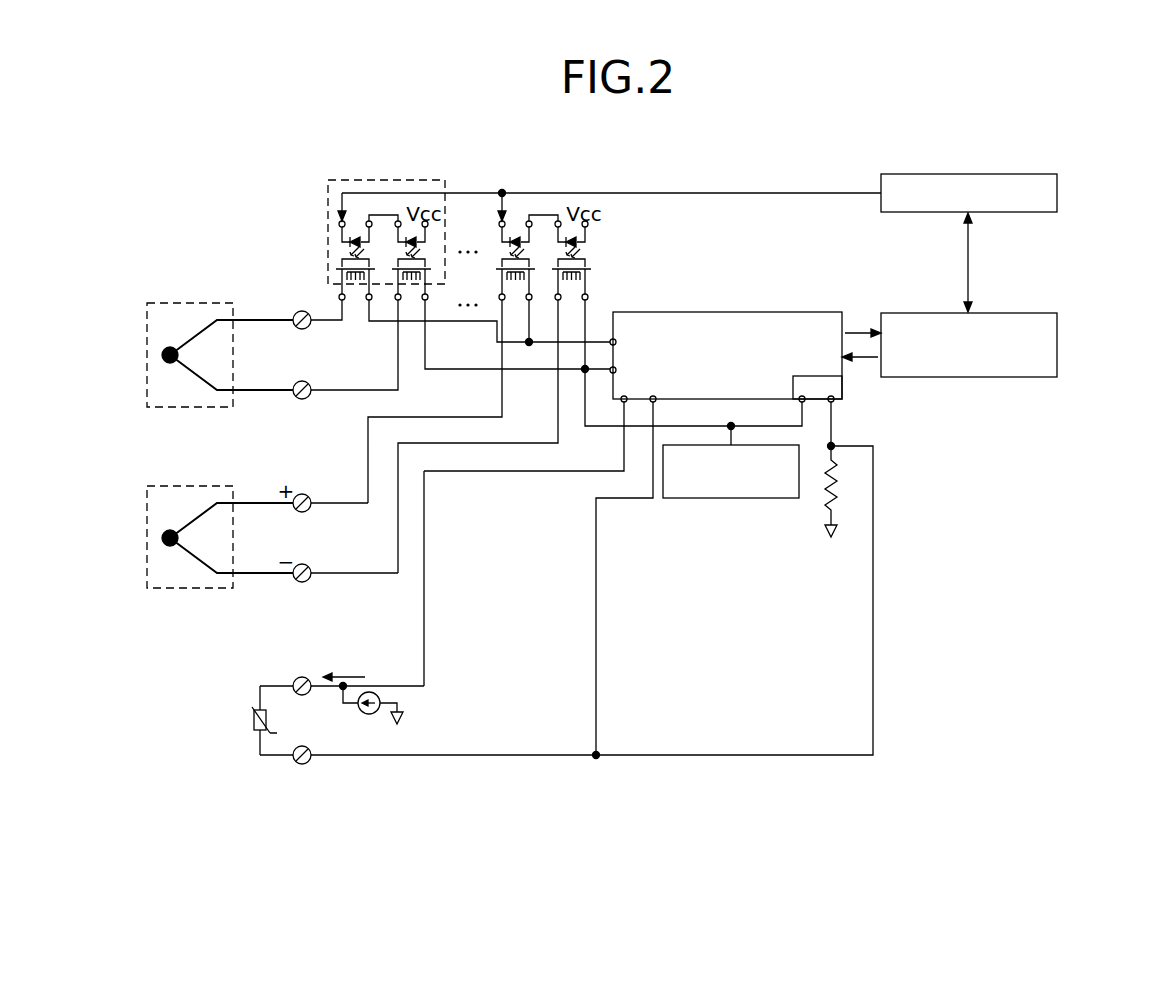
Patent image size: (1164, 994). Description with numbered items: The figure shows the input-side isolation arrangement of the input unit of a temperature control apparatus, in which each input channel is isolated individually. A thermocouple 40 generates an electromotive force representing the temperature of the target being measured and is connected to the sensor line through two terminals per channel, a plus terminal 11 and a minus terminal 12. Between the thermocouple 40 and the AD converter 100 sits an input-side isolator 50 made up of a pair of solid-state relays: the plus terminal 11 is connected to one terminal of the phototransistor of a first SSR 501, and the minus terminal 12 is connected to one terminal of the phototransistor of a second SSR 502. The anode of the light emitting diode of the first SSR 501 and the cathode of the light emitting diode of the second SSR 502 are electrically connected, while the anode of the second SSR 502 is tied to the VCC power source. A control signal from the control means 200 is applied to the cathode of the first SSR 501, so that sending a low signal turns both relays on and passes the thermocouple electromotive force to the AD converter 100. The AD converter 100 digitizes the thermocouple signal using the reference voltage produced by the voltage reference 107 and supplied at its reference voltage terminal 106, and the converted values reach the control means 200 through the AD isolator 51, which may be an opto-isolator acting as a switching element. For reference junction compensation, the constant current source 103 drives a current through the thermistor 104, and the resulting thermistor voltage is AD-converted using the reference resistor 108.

The plus terminal 11 is at (302, 311).
The minus terminal 12 is at (304, 381).
The thermocouple 40 is at (186, 303).
The input-side isolator 50 is at (411, 214).
The AD isolator 51 is at (1057, 343).
The AD converter 100 is at (750, 341).
The constant current source 103 is at (370, 692).
The thermistor 104 is at (246, 711).
The reference voltage terminal 106 is at (842, 388).
The voltage reference 107 is at (717, 498).
The reference resistor 108 is at (827, 512).
The control means 200 is at (1057, 191).
The first SSR 501 is at (330, 246).
The second SSR 502 is at (440, 239).